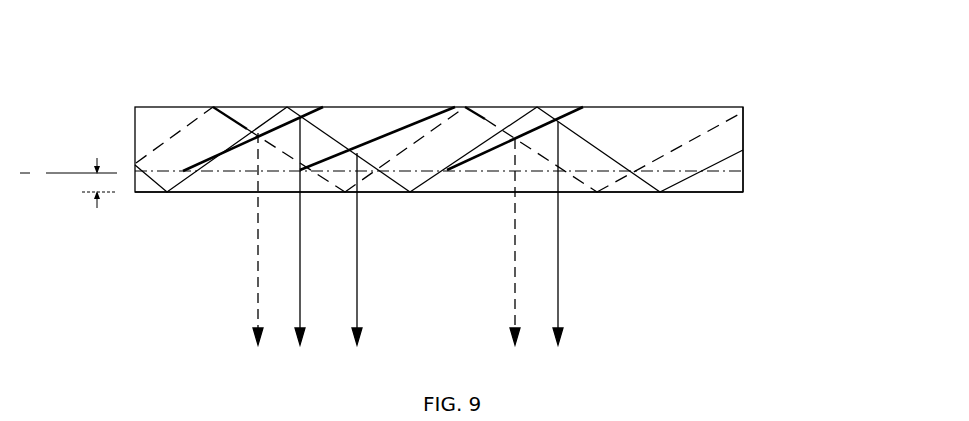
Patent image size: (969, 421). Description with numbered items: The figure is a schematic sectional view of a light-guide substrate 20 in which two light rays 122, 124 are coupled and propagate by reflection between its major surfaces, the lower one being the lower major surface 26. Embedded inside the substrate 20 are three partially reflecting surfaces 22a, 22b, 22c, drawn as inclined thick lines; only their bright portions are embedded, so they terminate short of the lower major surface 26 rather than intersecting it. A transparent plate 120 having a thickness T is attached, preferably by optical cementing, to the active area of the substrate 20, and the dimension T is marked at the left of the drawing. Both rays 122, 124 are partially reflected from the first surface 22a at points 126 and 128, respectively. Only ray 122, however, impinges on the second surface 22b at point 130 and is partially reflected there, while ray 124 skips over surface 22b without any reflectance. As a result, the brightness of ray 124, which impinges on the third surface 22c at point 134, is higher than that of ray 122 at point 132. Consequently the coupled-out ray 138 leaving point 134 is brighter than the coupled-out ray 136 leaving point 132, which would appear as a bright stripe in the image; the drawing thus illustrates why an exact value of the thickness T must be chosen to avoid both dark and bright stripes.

The substrate 20 is at (693, 108).
The partially reflecting surface 22a is at (588, 108).
The partially reflecting surface 22b is at (455, 107).
The partially reflecting surface 22c is at (322, 107).
The lower major surface 26 is at (628, 193).
The transparent plate 120 is at (448, 172).
The light ray 122 is at (745, 150).
The light ray 124 is at (745, 122).
The reflection point 126 is at (557, 120).
The reflection point 128 is at (544, 108).
The reflection point 130 is at (358, 153).
The reflection point 132 is at (290, 120).
The reflection point 134 is at (248, 120).
The coupled-out ray 136 is at (424, 242).
The coupled-out ray 138 is at (366, 239).
The thickness T is at (68, 183).